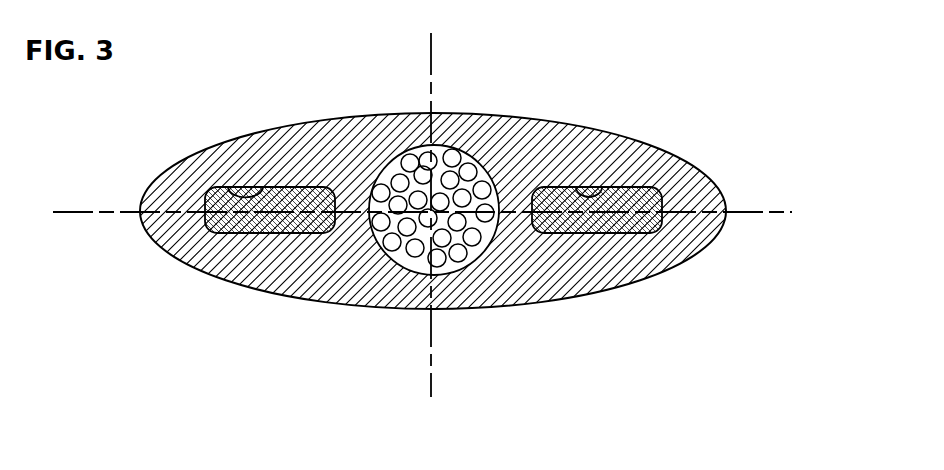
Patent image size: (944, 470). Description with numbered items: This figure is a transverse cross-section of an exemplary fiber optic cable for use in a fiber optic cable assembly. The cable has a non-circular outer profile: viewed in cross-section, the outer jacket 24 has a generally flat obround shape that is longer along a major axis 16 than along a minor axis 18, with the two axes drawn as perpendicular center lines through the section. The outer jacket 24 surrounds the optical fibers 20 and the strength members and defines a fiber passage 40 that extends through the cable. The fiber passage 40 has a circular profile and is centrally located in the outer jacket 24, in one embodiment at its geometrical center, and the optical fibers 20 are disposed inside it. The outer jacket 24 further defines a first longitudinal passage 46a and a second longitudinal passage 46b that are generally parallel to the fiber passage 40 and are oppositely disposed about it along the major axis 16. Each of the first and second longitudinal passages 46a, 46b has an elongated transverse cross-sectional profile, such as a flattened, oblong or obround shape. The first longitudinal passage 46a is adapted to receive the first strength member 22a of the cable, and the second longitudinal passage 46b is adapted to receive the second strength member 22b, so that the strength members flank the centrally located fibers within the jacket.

The major axis 16 is at (758, 213).
The minor axis 18 is at (433, 52).
The optical fiber 20 is at (428, 260).
The first strength member 22a is at (265, 234).
The second strength member 22b is at (588, 234).
The outer jacket 24 is at (512, 114).
The fiber passage 40 is at (403, 153).
The first longitudinal passage 46a is at (228, 187).
The second longitudinal passage 46b is at (602, 187).